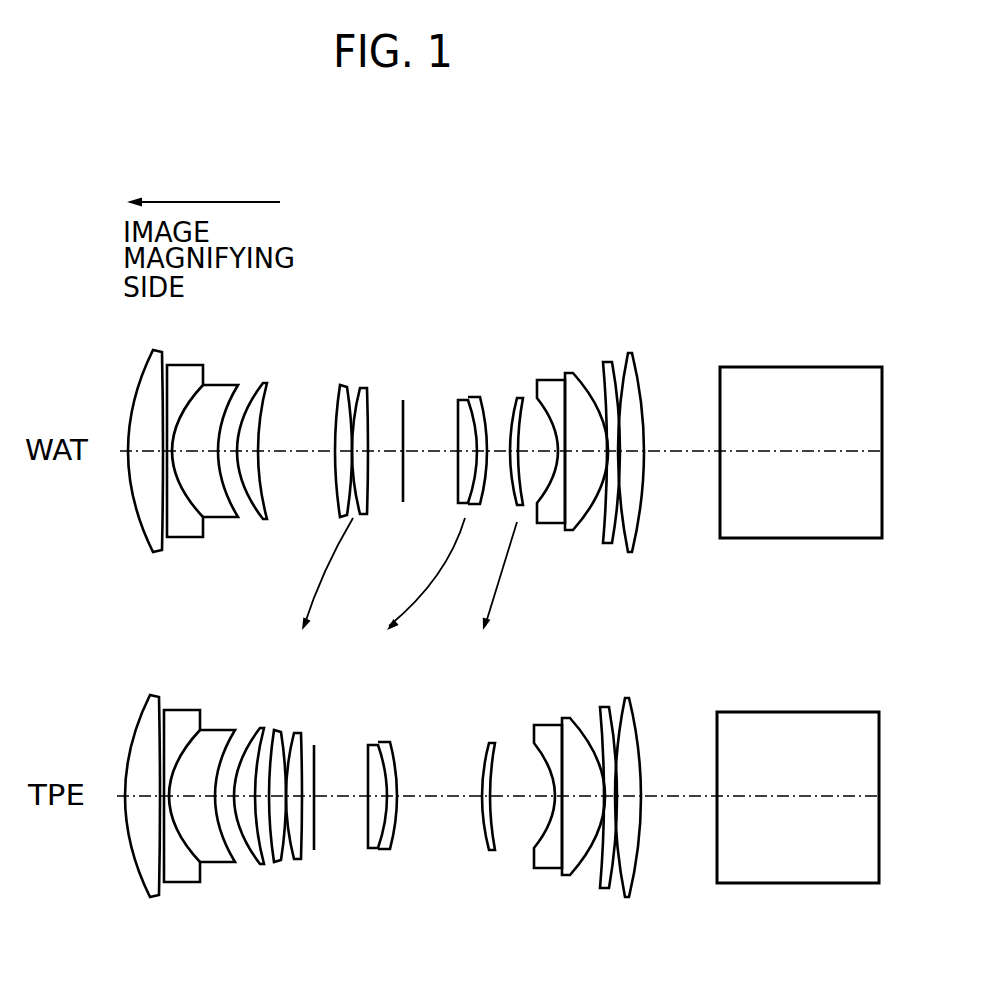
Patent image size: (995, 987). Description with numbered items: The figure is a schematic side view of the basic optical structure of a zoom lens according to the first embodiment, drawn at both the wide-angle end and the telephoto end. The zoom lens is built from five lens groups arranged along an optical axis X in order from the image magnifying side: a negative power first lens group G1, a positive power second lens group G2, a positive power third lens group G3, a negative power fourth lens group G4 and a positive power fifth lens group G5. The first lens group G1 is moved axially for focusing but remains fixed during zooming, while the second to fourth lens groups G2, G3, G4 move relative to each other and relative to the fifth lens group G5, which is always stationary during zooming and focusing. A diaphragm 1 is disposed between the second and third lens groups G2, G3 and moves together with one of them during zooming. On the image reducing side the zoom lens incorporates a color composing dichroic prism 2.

The diaphragm 1 is at (403, 473).
The color composing dichroic prism 2 is at (840, 367).
The optical axis X is at (707, 455).
The first lens group G1 is at (127, 342).
The second lens group G2 is at (368, 342).
The third lens group G3 is at (446, 342).
The fourth lens group G4 is at (522, 342).
The fifth lens group G5 is at (643, 342).